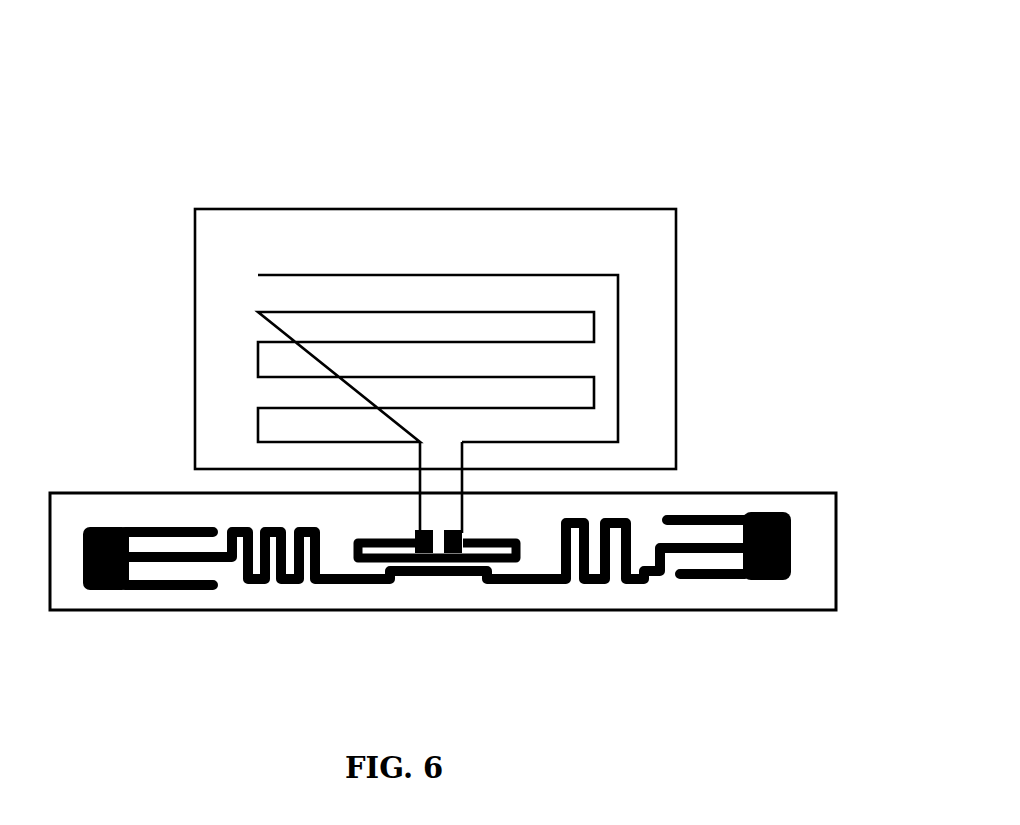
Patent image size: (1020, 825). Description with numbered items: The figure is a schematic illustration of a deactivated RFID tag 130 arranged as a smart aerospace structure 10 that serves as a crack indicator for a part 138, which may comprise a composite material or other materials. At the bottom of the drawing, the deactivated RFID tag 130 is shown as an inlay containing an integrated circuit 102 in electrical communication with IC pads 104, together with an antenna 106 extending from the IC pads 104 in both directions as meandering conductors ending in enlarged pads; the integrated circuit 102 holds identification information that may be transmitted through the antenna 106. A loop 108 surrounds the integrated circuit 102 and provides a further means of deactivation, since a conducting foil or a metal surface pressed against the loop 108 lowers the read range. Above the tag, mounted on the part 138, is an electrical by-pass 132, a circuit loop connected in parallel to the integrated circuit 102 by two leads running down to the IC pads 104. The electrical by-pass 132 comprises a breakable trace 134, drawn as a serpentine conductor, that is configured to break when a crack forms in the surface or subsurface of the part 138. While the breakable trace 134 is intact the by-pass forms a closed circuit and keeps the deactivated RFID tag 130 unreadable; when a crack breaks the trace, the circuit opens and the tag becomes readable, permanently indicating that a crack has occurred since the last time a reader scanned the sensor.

The smart aerospace structure 10 is at (810, 173).
The integrated circuit 102 is at (437, 548).
The IC pads 104 is at (418, 535).
The antenna 106 is at (127, 512).
The loop 108 is at (462, 590).
The deactivated RFID tag 130 is at (780, 622).
The electrical by-pass 132 is at (351, 203).
The breakable trace 134 is at (473, 275).
The part 138 is at (635, 230).